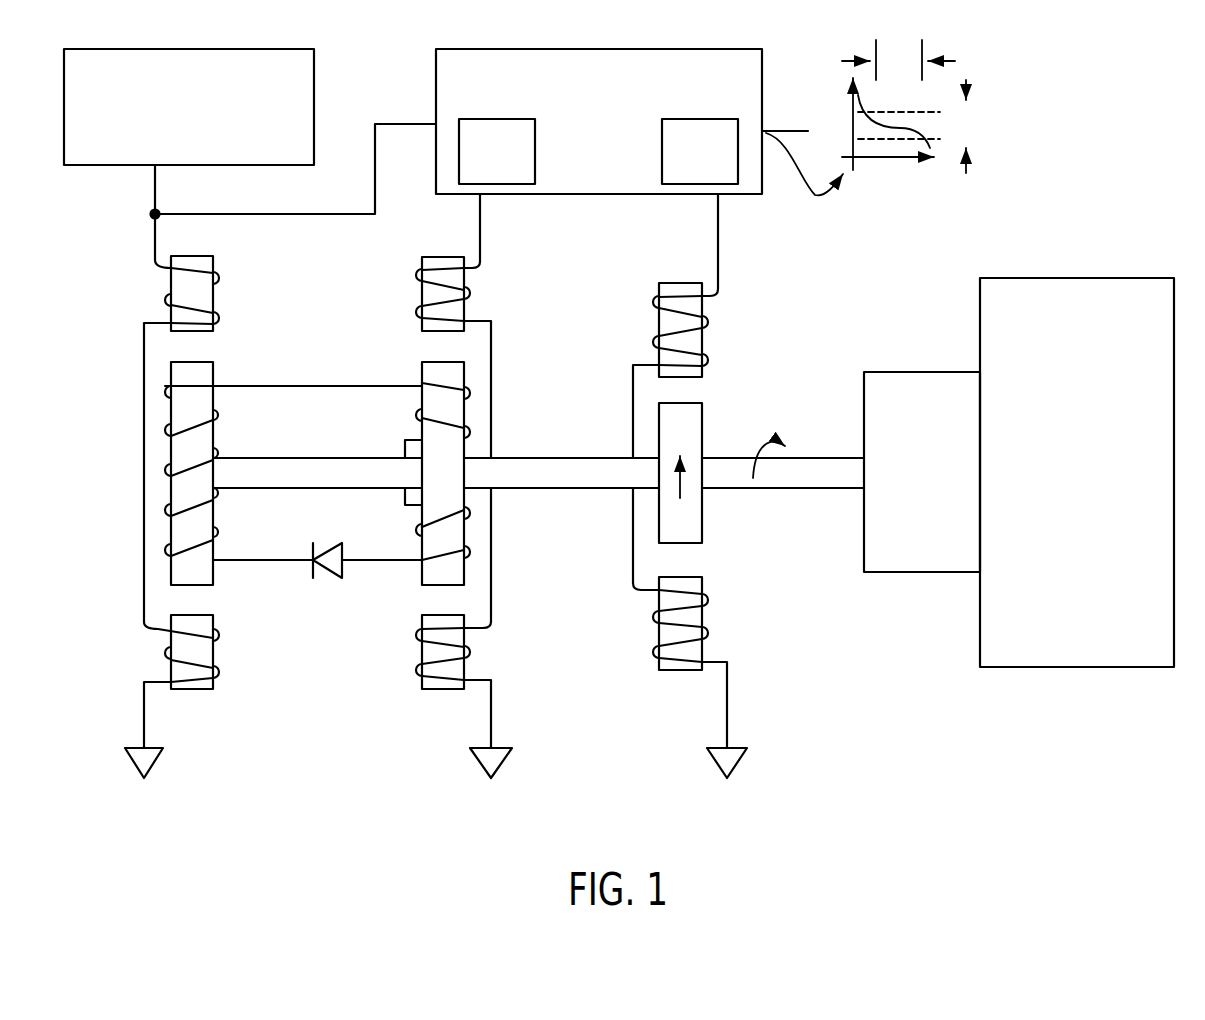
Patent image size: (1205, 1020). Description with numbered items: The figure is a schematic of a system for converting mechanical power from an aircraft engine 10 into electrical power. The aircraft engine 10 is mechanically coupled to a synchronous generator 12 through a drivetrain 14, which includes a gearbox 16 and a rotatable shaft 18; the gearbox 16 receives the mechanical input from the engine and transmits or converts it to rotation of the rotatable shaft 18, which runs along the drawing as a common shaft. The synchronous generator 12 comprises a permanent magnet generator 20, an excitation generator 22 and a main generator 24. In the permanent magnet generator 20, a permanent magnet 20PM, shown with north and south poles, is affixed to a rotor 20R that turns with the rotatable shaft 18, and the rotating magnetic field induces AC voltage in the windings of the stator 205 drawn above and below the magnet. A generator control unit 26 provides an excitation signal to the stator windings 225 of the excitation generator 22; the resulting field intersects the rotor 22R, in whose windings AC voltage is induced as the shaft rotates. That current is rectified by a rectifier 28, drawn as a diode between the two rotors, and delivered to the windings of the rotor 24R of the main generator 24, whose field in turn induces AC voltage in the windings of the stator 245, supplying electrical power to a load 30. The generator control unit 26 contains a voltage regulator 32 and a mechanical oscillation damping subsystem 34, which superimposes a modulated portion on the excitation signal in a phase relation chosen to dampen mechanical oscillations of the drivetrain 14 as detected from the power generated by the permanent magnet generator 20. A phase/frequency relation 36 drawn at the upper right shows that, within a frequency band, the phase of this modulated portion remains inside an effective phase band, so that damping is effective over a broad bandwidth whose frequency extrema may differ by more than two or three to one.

The aircraft engine 10 is at (1083, 668).
The synchronous generator 12 is at (303, 793).
The drivetrain 14 is at (835, 358).
The gearbox 16 is at (920, 573).
The rotatable shaft 18 is at (830, 490).
The permanent magnet generator (PMG) 20 is at (714, 496).
The rotor of the permanent magnet generator 20R is at (727, 470).
The permanent magnet 20PM is at (703, 505).
The stator of the permanent magnet generator 205 is at (705, 330).
The excitation generator 22 is at (493, 496).
The rotor of the excitation generator 22R is at (491, 436).
The stator windings of the excitation generator 225 is at (468, 312).
The main generator 24 is at (273, 506).
The rotor of the main generator 24R is at (244, 436).
The stator of the main generator 245 is at (213, 303).
The generator control unit (GCU) 26 is at (599, 159).
The rectifier 28 is at (330, 578).
The load 30 is at (318, 87).
The voltage regulator 32 is at (520, 184).
The mechanical oscillation damping subsystem 34 is at (680, 184).
The phase/frequency relation 36 is at (970, 82).